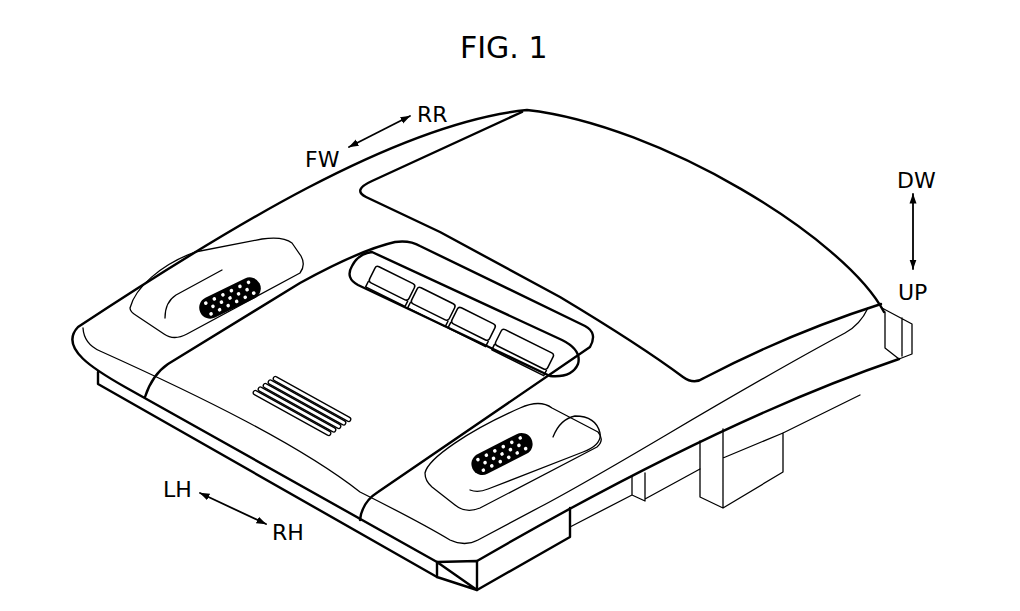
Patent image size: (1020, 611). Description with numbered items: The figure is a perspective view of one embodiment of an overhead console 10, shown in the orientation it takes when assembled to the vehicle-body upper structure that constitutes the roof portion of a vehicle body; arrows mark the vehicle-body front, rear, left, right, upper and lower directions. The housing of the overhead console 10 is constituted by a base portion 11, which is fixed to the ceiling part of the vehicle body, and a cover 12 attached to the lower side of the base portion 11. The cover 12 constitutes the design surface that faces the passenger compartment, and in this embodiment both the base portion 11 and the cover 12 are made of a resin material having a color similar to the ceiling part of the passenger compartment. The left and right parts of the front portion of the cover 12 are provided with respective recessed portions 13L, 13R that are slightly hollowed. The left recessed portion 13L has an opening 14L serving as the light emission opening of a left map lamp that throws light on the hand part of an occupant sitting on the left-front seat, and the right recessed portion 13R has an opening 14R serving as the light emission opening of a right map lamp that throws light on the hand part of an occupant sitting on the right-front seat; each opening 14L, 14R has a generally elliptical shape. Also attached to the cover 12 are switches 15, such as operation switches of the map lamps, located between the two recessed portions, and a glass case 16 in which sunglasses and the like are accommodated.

The overhead console 10 is at (157, 448).
The base portion 11 is at (807, 423).
The cover 12 is at (327, 223).
The left recessed portion 13L is at (183, 280).
The right recessed portion 13R is at (553, 440).
The opening 14L is at (230, 284).
The opening 14R is at (493, 447).
The switches 15 is at (440, 300).
The glass case 16 is at (680, 187).